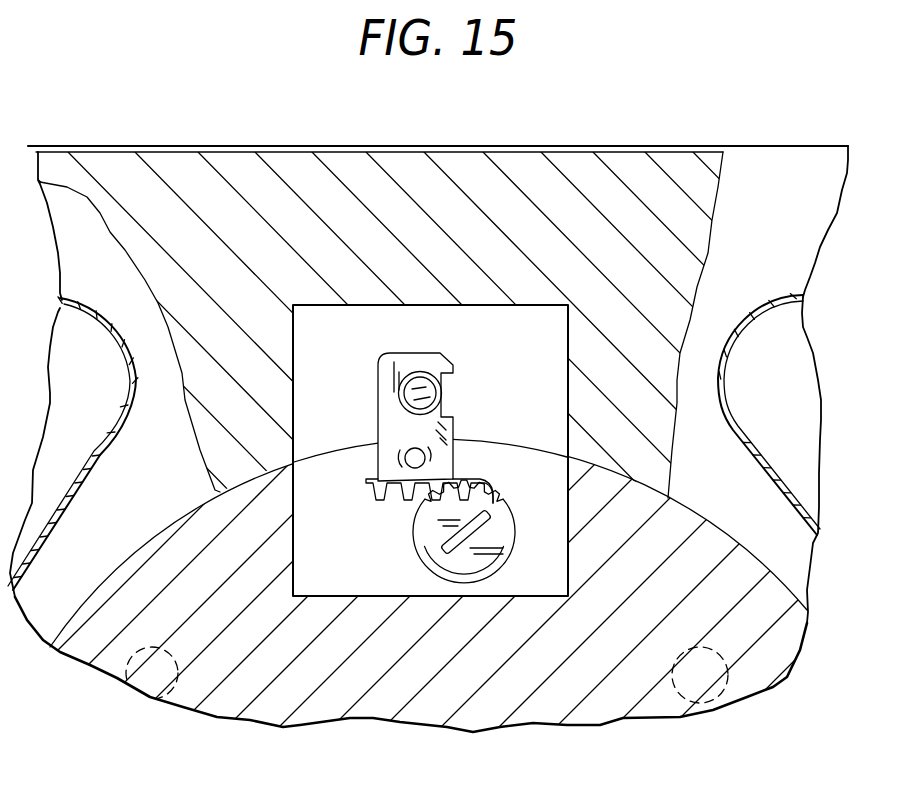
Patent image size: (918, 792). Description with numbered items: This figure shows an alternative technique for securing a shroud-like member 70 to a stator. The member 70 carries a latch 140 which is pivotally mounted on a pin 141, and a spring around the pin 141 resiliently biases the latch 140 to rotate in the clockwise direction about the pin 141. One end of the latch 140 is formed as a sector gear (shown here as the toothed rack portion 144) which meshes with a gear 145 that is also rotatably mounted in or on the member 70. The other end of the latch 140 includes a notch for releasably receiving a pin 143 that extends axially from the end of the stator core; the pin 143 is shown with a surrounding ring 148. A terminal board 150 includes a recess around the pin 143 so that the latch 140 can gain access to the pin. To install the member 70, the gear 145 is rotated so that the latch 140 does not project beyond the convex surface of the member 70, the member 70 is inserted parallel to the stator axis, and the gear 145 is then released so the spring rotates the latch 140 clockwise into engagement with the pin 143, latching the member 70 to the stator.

The member 70 is at (762, 652).
The latch 140 is at (405, 358).
The pin 141 is at (453, 441).
The pin 143 is at (442, 393).
The rack 144 is at (390, 506).
The gear 145 is at (517, 533).
The roller bearing 148 is at (448, 377).
The terminal board 150 is at (177, 185).